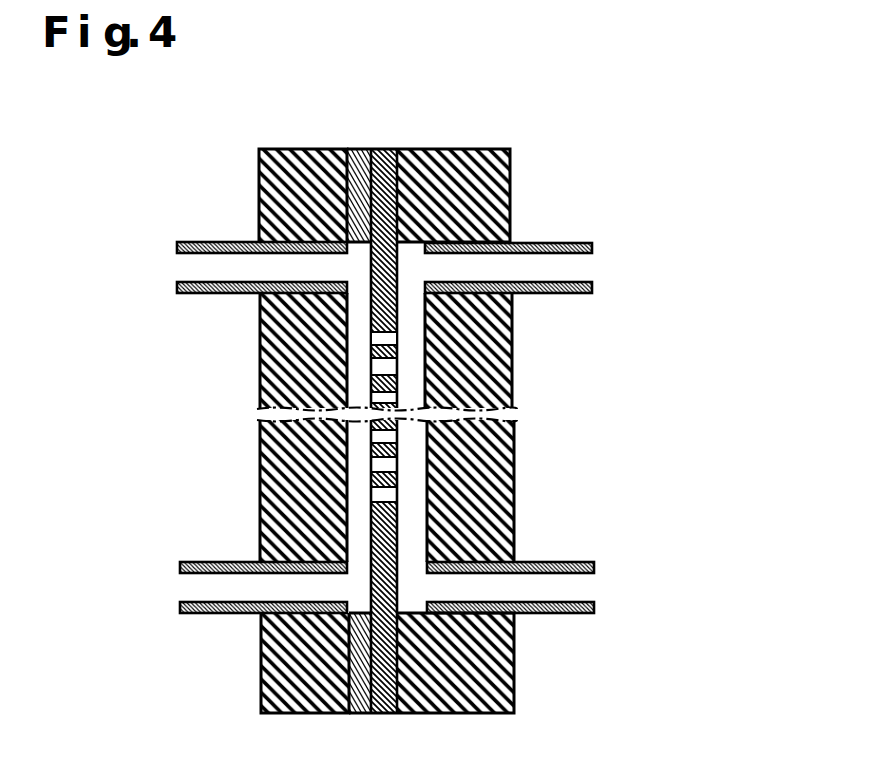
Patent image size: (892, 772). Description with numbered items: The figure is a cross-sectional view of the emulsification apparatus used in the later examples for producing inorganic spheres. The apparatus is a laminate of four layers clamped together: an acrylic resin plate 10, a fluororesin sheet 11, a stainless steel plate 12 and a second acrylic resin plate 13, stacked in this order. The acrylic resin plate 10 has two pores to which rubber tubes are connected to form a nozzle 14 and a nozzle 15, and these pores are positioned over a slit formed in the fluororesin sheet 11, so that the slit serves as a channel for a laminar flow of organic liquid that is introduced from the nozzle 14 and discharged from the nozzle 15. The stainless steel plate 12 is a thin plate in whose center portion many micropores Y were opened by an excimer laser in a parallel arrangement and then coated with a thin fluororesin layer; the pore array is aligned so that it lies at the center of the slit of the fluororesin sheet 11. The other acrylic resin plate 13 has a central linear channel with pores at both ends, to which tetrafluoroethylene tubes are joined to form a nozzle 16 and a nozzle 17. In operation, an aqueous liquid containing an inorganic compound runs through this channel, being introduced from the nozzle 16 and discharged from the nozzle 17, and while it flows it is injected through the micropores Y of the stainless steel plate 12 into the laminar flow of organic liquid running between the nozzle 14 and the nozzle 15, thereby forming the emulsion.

The acrylic resin plate 10 is at (298, 167).
The fluororesin sheet 11 is at (358, 160).
The stainless steel plate 12 is at (381, 148).
The acrylic resin plate 13 is at (440, 149).
The nozzle 14 is at (178, 606).
The nozzle 15 is at (213, 242).
The nozzle 16 is at (596, 605).
The nozzle 17 is at (565, 242).
The micropores Y is at (392, 337).